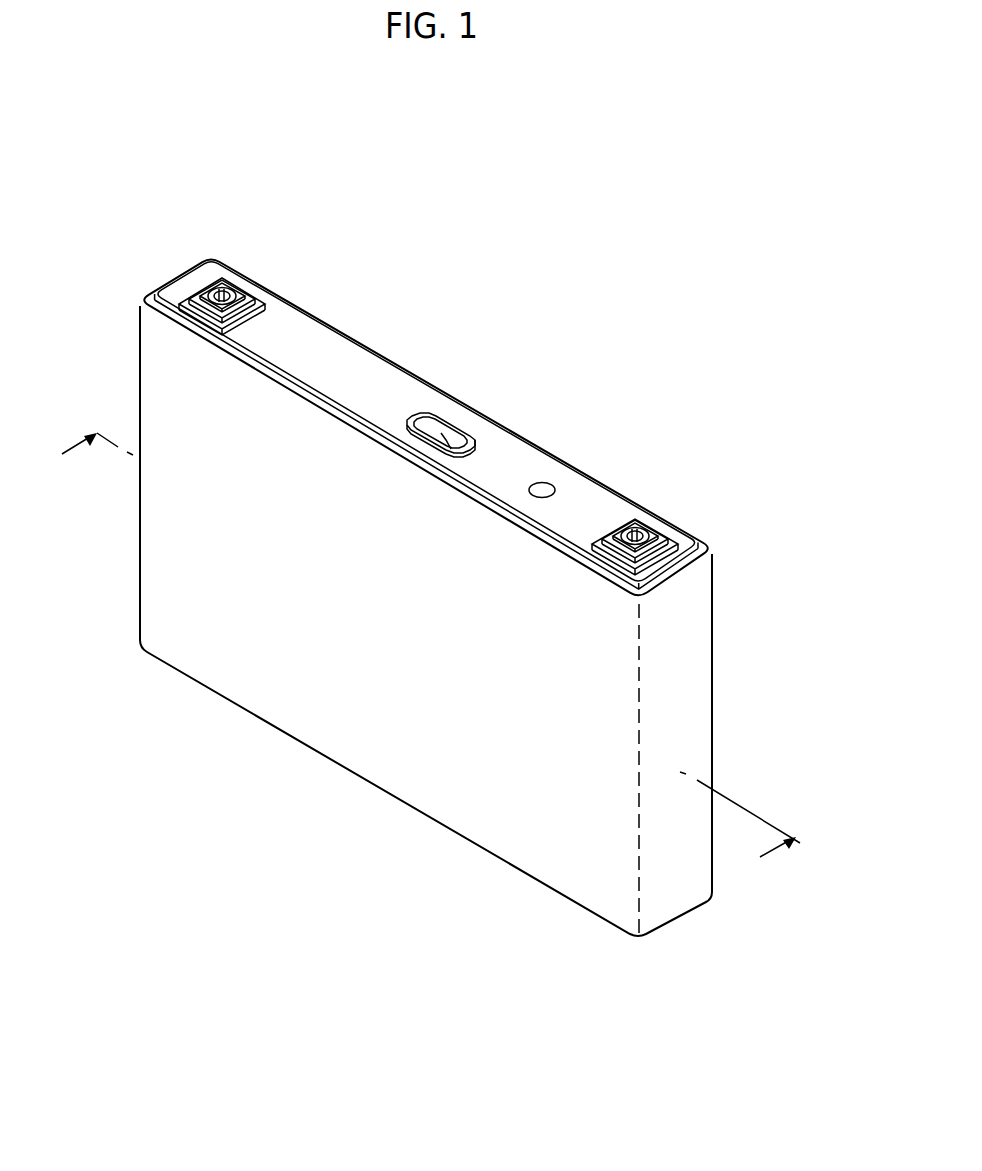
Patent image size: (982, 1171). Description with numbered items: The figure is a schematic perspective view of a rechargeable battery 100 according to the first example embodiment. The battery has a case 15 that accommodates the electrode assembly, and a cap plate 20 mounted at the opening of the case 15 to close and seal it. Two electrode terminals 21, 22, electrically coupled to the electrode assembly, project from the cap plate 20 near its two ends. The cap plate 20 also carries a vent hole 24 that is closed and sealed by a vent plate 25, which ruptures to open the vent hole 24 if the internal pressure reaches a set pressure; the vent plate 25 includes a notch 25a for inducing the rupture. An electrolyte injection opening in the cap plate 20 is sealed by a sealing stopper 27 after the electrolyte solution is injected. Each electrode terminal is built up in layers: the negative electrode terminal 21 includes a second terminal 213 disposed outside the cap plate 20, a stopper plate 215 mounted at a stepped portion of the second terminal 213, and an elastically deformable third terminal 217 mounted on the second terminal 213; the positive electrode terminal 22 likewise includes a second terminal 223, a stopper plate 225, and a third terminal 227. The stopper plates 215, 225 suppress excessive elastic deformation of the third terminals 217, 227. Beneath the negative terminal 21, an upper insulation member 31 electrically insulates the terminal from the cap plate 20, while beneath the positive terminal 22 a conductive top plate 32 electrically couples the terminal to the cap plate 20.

The rechargeable battery 100 is at (508, 280).
The case 15 is at (350, 728).
The cap plate 20 is at (340, 348).
The electrode terminal 21 is at (185, 267).
The electrode terminal 22 is at (687, 513).
The vent hole 24 is at (427, 415).
The vent plate 25 is at (443, 432).
The notch 25a is at (452, 445).
The sealing stopper 27 is at (542, 486).
The upper insulation member 31 is at (190, 312).
The top plate 32 is at (660, 562).
The second terminal 213 is at (178, 300).
The stopper plate 215 is at (200, 297).
The third terminal 217 is at (228, 293).
The second terminal 223 is at (688, 539).
The stopper plate 225 is at (650, 544).
The third terminal 227 is at (641, 534).